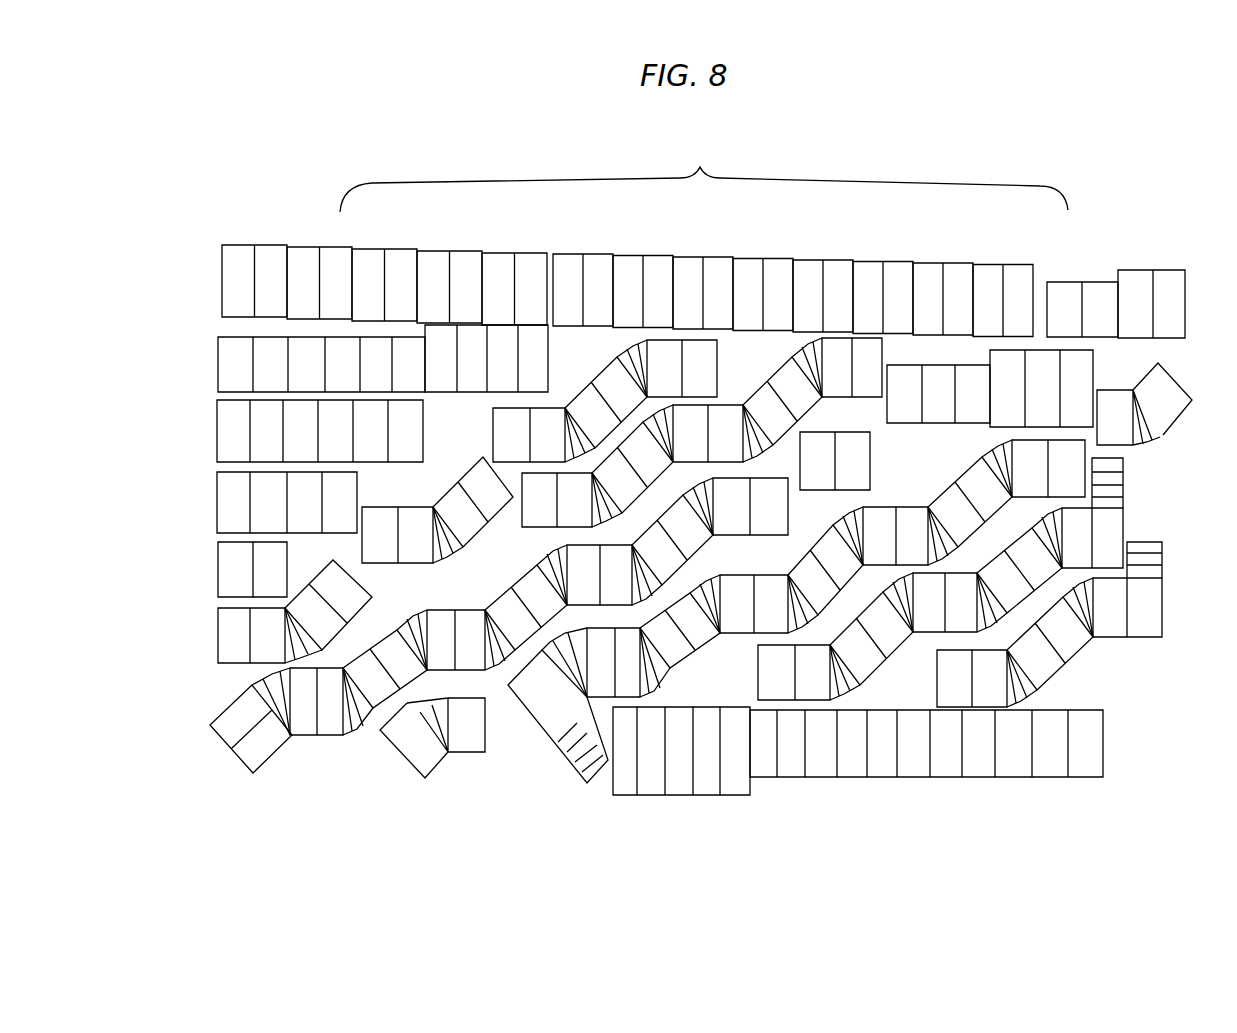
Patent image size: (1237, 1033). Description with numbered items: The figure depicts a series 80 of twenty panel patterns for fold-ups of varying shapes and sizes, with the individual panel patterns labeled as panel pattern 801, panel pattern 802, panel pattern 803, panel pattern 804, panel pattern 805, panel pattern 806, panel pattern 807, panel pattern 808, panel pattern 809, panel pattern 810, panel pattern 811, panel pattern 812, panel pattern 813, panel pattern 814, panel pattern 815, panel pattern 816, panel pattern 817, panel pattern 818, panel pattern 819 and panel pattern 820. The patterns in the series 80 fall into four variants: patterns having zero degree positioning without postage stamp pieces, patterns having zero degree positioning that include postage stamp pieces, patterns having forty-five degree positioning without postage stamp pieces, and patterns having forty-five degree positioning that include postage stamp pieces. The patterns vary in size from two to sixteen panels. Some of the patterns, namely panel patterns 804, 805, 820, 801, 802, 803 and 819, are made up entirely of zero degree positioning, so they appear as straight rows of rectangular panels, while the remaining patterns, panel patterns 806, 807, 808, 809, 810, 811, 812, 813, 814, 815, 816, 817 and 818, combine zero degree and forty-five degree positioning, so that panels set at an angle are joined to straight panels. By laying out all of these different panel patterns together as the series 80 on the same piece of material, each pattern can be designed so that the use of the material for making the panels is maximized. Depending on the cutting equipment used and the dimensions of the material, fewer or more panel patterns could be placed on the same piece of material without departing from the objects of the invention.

The series of panel patterns 80 is at (704, 178).
The panel pattern 801 is at (262, 563).
The panel pattern 802 is at (347, 488).
The panel pattern 803 is at (397, 432).
The panel pattern 804 is at (378, 248).
The panel pattern 805 is at (977, 263).
The panel pattern 806 is at (548, 538).
The panel pattern 807 is at (375, 565).
The panel pattern 808 is at (574, 400).
The panel pattern 809 is at (1160, 440).
The panel pattern 810 is at (488, 672).
The panel pattern 811 is at (447, 756).
The panel pattern 812 is at (367, 605).
The panel pattern 813 is at (1063, 663).
The panel pattern 814 is at (757, 682).
The panel pattern 815 is at (575, 775).
The panel pattern 816 is at (873, 455).
The panel pattern 817 is at (1130, 268).
The panel pattern 818 is at (1097, 352).
The panel pattern 819 is at (297, 350).
The panel pattern 820 is at (1010, 772).